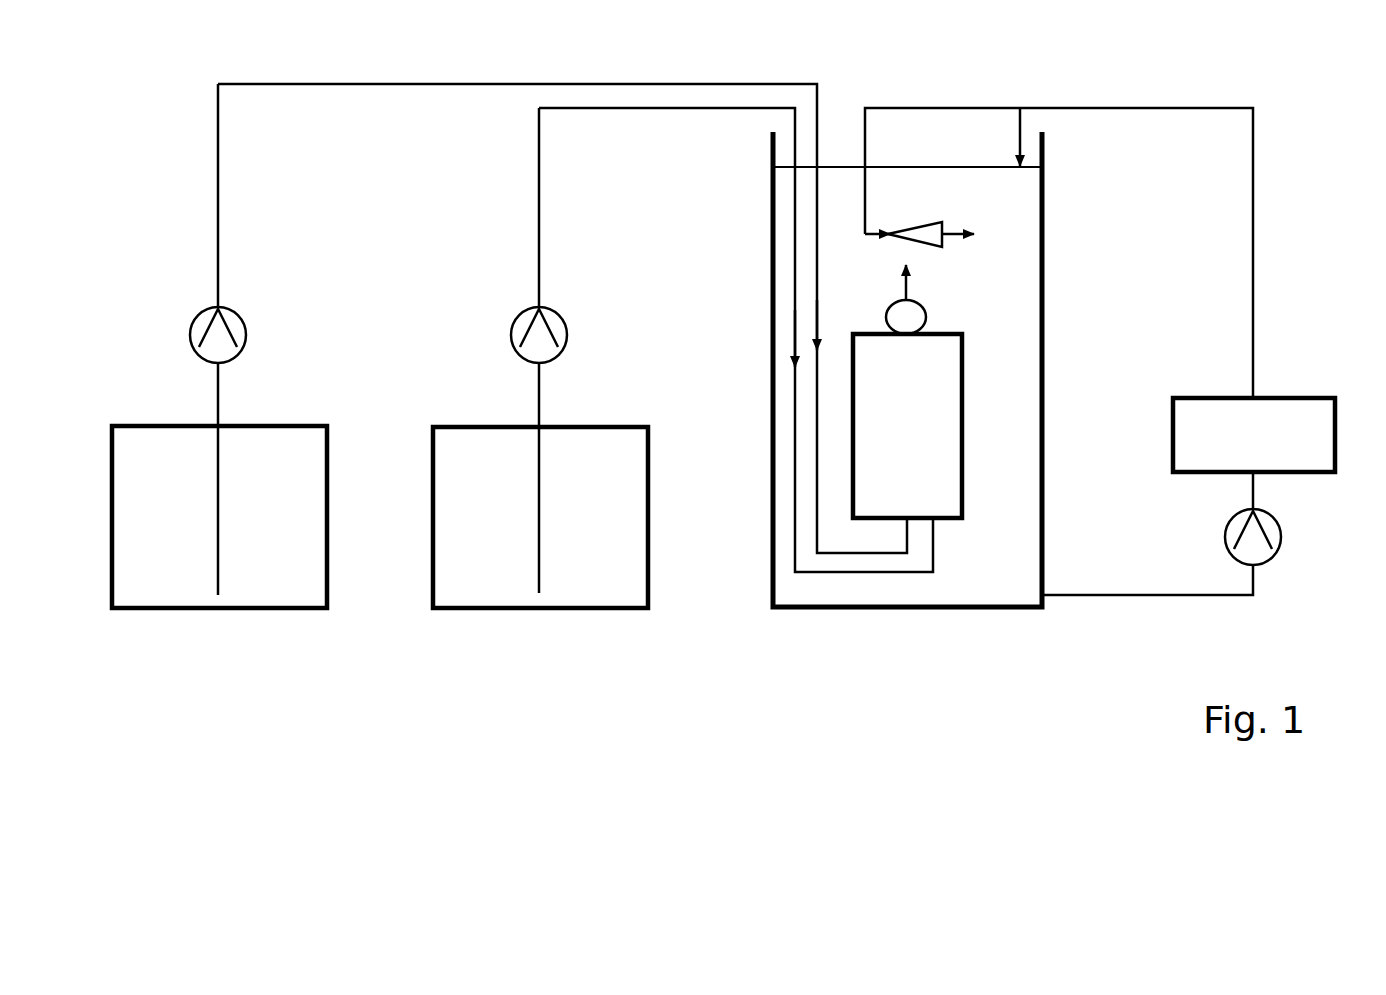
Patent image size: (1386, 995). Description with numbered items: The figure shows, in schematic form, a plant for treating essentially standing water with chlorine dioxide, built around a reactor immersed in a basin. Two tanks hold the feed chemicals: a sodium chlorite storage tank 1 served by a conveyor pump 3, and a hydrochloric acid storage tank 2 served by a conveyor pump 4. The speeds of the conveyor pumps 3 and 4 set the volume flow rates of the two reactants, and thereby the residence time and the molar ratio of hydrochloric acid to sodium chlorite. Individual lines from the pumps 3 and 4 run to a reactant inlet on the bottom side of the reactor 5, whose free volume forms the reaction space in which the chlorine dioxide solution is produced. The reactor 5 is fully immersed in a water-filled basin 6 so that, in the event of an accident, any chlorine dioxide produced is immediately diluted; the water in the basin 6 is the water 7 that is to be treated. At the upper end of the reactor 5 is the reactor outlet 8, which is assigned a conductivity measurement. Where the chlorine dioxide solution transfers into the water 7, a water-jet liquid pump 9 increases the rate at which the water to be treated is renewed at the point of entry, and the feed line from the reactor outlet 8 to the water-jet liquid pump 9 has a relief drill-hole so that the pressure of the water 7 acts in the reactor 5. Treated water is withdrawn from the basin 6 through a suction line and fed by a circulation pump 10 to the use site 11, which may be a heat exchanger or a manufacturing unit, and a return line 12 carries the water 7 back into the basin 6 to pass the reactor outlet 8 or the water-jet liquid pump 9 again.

The sodium chlorite storage tank 1 is at (206, 517).
The hydrochloric acid storage tank 2 is at (523, 517).
The conveyor pump 3 is at (548, 318).
The conveyor pump 4 is at (722, 340).
The reactor 5 is at (907, 426).
The water-filled basin 6 is at (920, 369).
The water to be treated 7 is at (974, 224).
The reactor outlet 8 is at (919, 299).
The water-jet liquid pump 9 is at (903, 221).
The circulation pump 10 is at (1281, 518).
The use site 11 is at (1279, 437).
The return line 12 is at (1089, 351).